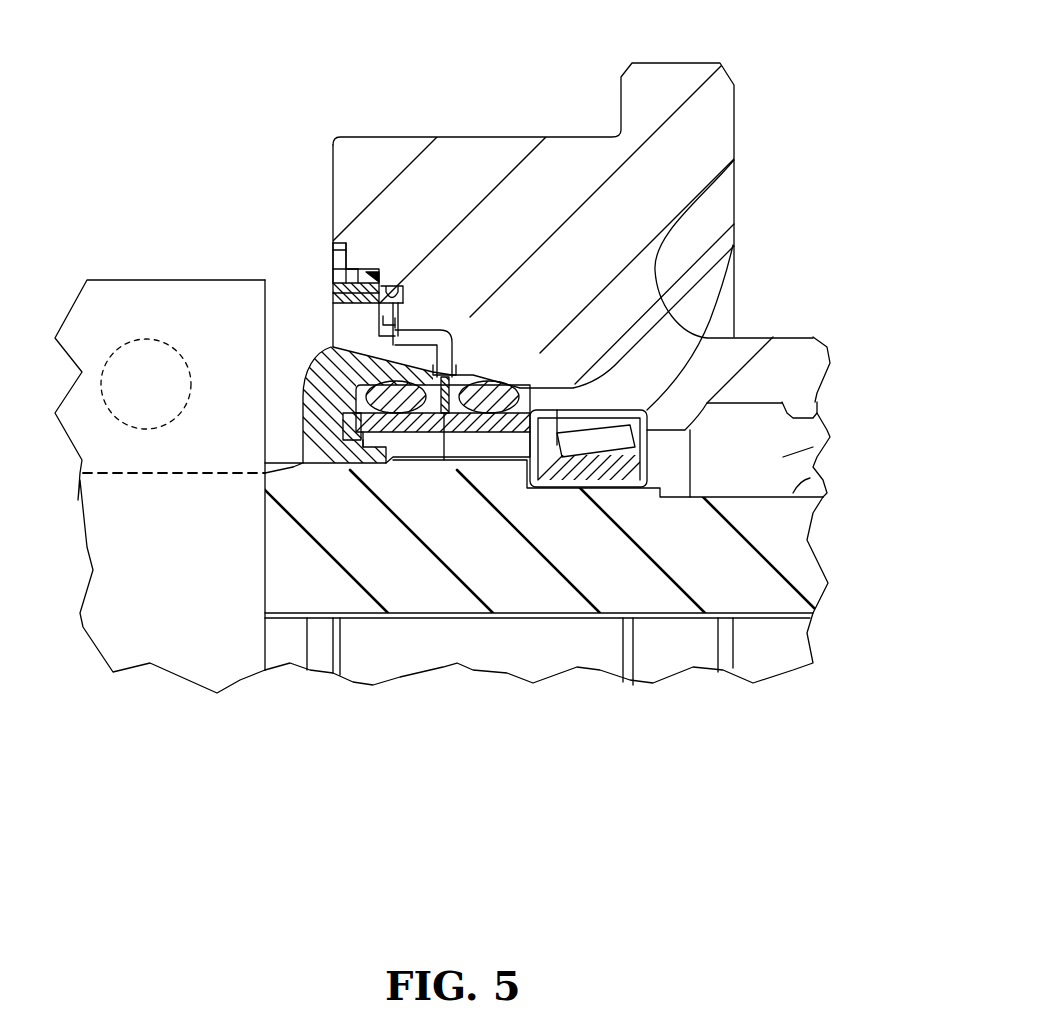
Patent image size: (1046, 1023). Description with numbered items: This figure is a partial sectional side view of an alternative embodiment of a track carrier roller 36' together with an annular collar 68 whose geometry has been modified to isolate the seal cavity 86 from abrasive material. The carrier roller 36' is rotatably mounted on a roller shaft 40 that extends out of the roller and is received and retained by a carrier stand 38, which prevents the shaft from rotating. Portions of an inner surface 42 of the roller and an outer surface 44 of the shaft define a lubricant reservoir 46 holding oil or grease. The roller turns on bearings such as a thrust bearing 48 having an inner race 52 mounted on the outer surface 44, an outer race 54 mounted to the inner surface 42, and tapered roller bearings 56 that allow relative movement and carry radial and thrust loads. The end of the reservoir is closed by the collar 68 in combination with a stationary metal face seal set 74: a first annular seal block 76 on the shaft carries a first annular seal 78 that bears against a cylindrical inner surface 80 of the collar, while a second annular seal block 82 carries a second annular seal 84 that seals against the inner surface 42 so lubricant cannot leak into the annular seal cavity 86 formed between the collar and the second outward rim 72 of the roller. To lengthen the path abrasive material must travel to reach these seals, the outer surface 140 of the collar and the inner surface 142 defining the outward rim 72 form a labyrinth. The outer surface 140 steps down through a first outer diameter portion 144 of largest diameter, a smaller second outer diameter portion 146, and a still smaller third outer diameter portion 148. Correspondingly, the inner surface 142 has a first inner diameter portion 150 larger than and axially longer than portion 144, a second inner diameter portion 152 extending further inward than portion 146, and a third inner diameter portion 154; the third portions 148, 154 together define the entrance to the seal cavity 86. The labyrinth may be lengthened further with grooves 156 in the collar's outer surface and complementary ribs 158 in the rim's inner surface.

The carrier roller 36' is at (571, 572).
The carrier stand 38 is at (143, 577).
The roller shaft 40 is at (370, 560).
The inner surface 42 is at (817, 413).
The outer surface 44 is at (793, 493).
The lubricant reservoir 46 is at (783, 457).
The thrust bearing 48 is at (556, 430).
The inner race 52 is at (622, 432).
The outer race 54 is at (733, 248).
The tapered roller bearings 56 is at (737, 337).
The annular collar 68 is at (370, 368).
The second outward rim 72 is at (352, 258).
The stationary metal face seal set 74 is at (518, 352).
The first annular seal block 76 is at (425, 442).
The first annular seal 78 is at (380, 414).
The cylindrical inner surface 80 is at (352, 412).
The second annular seal block 82 is at (473, 412).
The second annular seal 84 is at (660, 300).
The annular seal cavity 86 is at (470, 377).
The outer surface 140 is at (333, 278).
The inner surface 142 is at (352, 258).
The first outer diameter portion 144 is at (345, 285).
The second outer diameter portion 146 is at (340, 302).
The third outer diameter portion 148 is at (380, 340).
The first inner diameter portion 150 is at (376, 269).
The second inner diameter portion 152 is at (381, 276).
The third inner diameter portion 154 is at (450, 333).
The grooves 156 is at (387, 319).
The ribs 158 is at (396, 320).